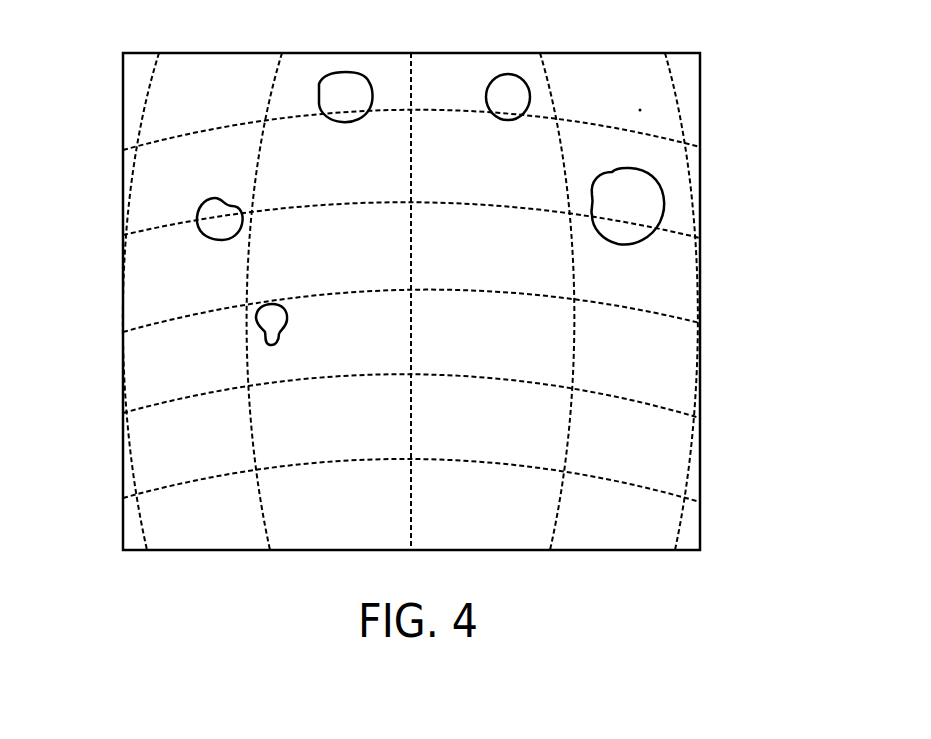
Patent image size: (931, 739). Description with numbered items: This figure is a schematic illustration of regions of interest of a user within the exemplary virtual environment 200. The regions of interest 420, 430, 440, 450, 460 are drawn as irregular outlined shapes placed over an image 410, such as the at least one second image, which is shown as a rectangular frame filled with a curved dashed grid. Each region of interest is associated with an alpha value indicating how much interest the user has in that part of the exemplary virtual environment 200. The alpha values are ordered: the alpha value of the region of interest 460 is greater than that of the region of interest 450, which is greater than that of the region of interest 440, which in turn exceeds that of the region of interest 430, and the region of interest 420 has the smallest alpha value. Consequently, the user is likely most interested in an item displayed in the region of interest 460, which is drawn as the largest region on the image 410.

The exemplary virtual environment 200 is at (692, 44).
The image 410 is at (703, 376).
The region of interest 420 is at (262, 330).
The region of interest 430 is at (218, 232).
The region of interest 440 is at (343, 107).
The region of interest 450 is at (520, 98).
The region of interest 460 is at (655, 208).